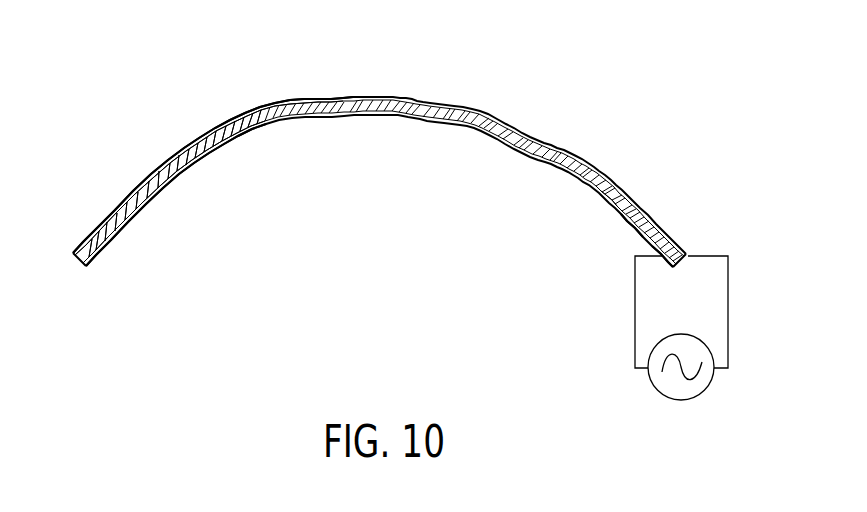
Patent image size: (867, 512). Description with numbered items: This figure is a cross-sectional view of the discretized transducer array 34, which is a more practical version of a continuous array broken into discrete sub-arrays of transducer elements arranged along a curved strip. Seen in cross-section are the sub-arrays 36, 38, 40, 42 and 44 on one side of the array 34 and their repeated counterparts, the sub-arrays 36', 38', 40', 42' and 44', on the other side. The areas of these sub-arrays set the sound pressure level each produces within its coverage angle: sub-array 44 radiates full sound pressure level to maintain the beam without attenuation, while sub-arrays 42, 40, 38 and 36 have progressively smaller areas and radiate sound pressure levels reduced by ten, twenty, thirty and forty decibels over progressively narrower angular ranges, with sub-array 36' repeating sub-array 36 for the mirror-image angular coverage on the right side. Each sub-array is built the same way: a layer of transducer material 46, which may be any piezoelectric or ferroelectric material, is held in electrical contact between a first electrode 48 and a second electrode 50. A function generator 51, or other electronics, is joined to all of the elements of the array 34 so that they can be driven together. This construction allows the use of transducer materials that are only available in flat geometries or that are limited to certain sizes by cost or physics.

The array 34 is at (240, 82).
The sub-array 36 is at (379, 149).
The sub-array 38 is at (379, 144).
The sub-array 40 is at (385, 156).
The sub-array 42 is at (379, 169).
The sub-array 44 is at (404, 191).
The sub-array 36' is at (250, 175).
The sub-array 38' is at (209, 178).
The sub-array 40' is at (175, 183).
The sub-array 42' is at (174, 193).
The sub-array 44' is at (176, 215).
The transducer material 46 is at (607, 200).
The first electrode 48 is at (666, 250).
The second electrode 50 is at (632, 233).
The function generator 51 is at (703, 340).